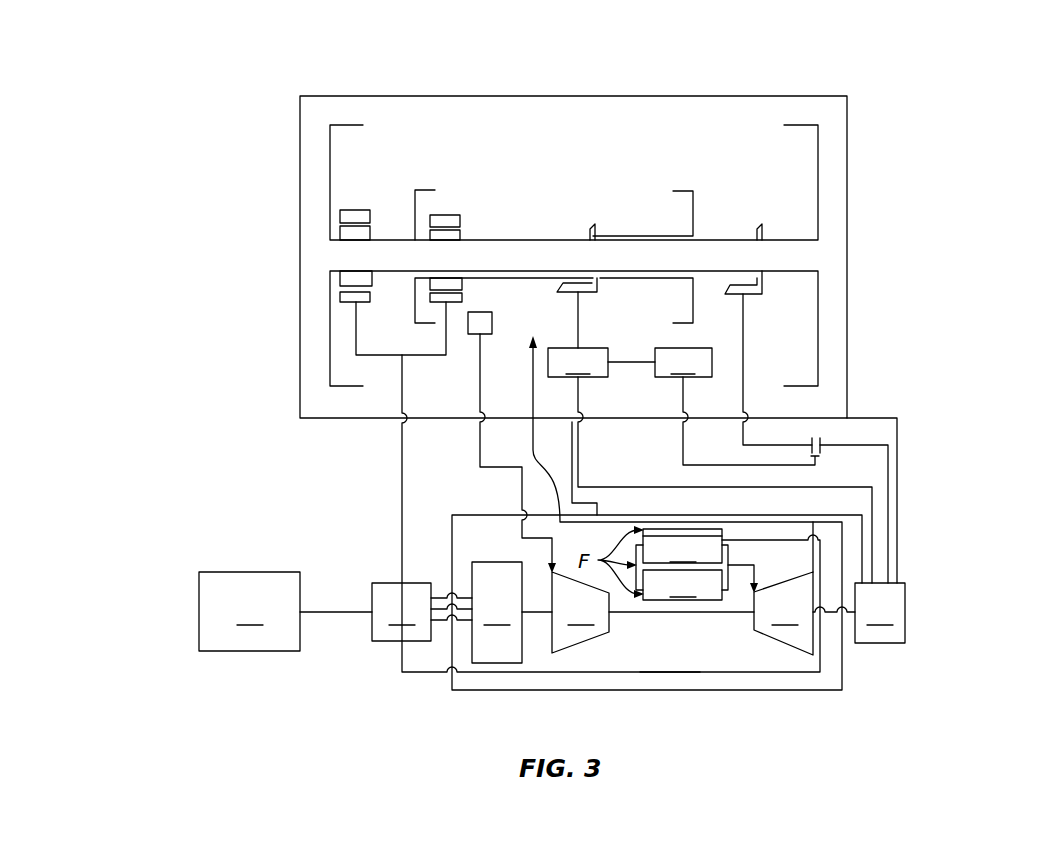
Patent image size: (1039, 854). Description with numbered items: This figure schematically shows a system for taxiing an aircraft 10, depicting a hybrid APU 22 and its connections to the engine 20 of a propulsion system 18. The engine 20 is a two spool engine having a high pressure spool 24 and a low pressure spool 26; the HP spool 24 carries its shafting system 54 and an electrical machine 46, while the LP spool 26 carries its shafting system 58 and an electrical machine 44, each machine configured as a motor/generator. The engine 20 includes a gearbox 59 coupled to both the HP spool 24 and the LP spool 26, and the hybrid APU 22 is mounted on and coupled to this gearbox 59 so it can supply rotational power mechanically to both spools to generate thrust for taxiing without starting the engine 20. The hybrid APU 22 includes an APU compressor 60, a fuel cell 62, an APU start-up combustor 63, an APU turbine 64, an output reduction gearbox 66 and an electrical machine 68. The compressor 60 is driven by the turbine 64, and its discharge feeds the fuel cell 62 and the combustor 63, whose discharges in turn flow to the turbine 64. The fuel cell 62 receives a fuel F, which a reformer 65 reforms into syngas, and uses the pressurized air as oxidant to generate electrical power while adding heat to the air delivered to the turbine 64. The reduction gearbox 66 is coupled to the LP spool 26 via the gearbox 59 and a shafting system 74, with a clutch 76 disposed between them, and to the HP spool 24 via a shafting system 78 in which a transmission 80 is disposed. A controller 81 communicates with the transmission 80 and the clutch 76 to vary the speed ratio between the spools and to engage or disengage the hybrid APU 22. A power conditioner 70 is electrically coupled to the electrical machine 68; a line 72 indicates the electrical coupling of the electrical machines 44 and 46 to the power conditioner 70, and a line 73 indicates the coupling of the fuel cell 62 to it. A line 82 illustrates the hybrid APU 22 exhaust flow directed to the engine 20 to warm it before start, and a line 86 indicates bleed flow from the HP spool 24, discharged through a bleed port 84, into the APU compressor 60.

The aircraft 10 is at (285, 611).
The propulsion system 18 is at (244, 416).
The engine 20 is at (958, 72).
The hybrid APU 22 is at (939, 681).
The high pressure (HP) spool 24 is at (693, 210).
The low pressure (LP) spool 26 is at (848, 180).
The electrical machine 44 is at (355, 210).
The electrical machine 46 is at (445, 215).
The shafting system 54 is at (513, 240).
The shafting system 58 is at (702, 240).
The gearbox 59 is at (897, 470).
The APU compressor 60 is at (653, 612).
The fuel cell 62 is at (682, 559).
The APU start-up combustor 63 is at (682, 585).
The APU turbine 64 is at (804, 588).
The reformer 65 is at (727, 532).
The output reduction gearbox 66 is at (880, 613).
The electrical machine 68 is at (512, 612).
The power conditioner 70 is at (422, 612).
The line 72 is at (402, 480).
The line 73 is at (645, 672).
The shafting system 74 is at (743, 350).
The clutch 76 is at (834, 430).
The shafting system 78 is at (578, 320).
The transmission 80 is at (578, 327).
The controller 81 is at (713, 406).
The line 82 is at (532, 393).
The bleed port 84 is at (492, 322).
The line 86 is at (495, 470).